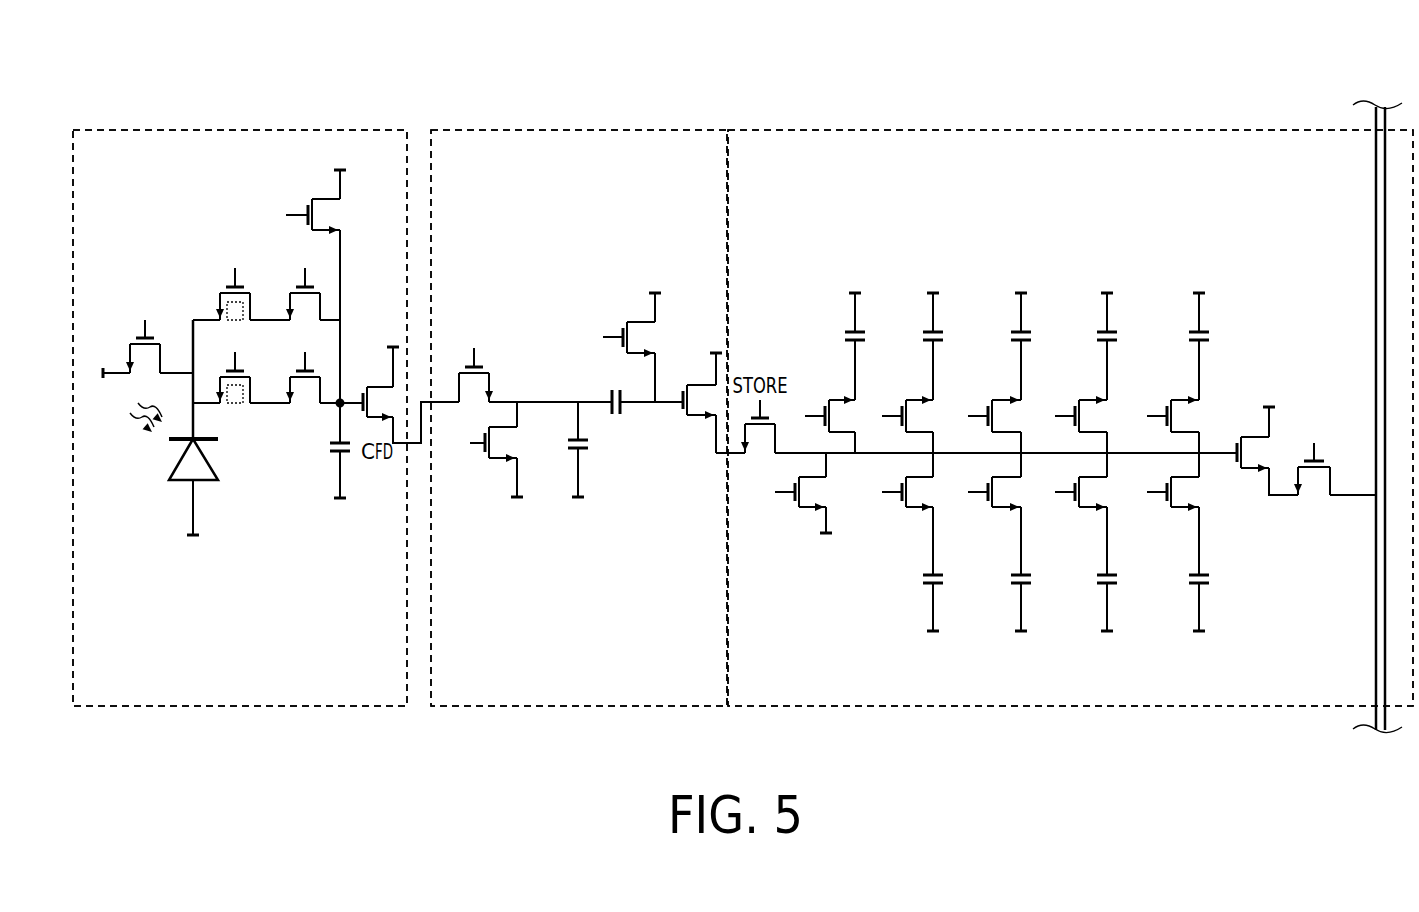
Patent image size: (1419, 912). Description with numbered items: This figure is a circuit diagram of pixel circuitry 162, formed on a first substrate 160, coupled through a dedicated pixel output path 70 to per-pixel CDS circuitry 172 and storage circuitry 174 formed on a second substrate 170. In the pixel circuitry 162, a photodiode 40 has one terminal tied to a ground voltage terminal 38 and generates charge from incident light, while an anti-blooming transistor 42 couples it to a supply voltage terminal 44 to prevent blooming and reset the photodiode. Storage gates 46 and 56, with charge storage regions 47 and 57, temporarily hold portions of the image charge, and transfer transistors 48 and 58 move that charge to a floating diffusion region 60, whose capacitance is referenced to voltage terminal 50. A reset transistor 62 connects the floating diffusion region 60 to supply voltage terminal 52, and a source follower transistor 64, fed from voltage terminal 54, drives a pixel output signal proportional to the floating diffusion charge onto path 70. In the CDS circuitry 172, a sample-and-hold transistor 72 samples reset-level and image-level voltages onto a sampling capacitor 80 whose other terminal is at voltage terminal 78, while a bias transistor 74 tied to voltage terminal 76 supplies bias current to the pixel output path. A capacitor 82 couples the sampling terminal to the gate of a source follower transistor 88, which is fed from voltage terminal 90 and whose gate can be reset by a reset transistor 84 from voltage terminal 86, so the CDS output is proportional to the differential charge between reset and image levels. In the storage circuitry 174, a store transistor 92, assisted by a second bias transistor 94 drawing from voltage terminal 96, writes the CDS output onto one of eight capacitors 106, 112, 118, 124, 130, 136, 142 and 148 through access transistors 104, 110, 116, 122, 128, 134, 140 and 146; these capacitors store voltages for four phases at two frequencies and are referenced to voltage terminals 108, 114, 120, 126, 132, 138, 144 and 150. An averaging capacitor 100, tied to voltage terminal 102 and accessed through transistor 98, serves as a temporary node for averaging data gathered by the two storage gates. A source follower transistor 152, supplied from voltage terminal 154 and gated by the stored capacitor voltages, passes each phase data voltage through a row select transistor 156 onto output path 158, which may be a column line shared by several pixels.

The voltage terminal 38 is at (193, 552).
The photodiode 40 is at (205, 487).
The anti-blooming transistor 42 is at (130, 348).
The voltage terminal 44 is at (104, 374).
The storage gate 46 is at (220, 296).
The charge storage region 47 is at (240, 312).
The transfer transistor 48 is at (290, 296).
The voltage terminal 50 is at (340, 514).
The voltage terminal 52 is at (340, 156).
The voltage terminal 54 is at (393, 353).
The storage gate 56 is at (220, 380).
The charge storage region 57 is at (240, 396).
The transfer transistor 58 is at (290, 380).
The floating diffusion region 60 is at (336, 412).
The reset transistor 62 is at (309, 205).
The source follower transistor 64 is at (363, 395).
The pixel circuitry output path 70 is at (421, 412).
The sample-and-hold transistor 72 is at (489, 375).
The bias transistor 74 is at (487, 460).
The voltage terminal 76 is at (517, 492).
The voltage terminal 78 is at (578, 511).
The sampling capacitor 80 is at (591, 449).
The capacitor 82 is at (617, 389).
The reset transistor 84 is at (625, 325).
The voltage terminal 86 is at (653, 293).
The source follower transistor 88 is at (685, 418).
The voltage terminal 90 is at (716, 355).
The store transistor 92 is at (760, 442).
The bias transistor 94 is at (797, 510).
The voltage terminal 96 is at (826, 535).
The capacitor access transistor 98 is at (826, 403).
The averaging capacitor 100 is at (871, 340).
The voltage terminal 102 is at (855, 298).
The capacitor access transistor 104 is at (904, 403).
The capacitor 106 is at (948, 340).
The voltage terminal 108 is at (933, 298).
The capacitor access transistor 110 is at (990, 403).
The capacitor 112 is at (1036, 340).
The voltage terminal 114 is at (1021, 298).
The capacitor access transistor 116 is at (1077, 403).
The capacitor 118 is at (1123, 340).
The voltage terminal 120 is at (1107, 298).
The capacitor access transistor 122 is at (1170, 403).
The capacitor 124 is at (1215, 340).
The voltage terminal 126 is at (1199, 298).
The capacitor access transistor 128 is at (904, 510).
The capacitor 130 is at (949, 583).
The voltage terminal 132 is at (933, 622).
The capacitor access transistor 134 is at (990, 510).
The capacitor 136 is at (1036, 583).
The voltage terminal 138 is at (1021, 622).
The capacitor access transistor 140 is at (1077, 510).
The capacitor 142 is at (1122, 583).
The voltage terminal 144 is at (1107, 622).
The capacitor access transistor 146 is at (1170, 510).
The capacitor 148 is at (1215, 583).
The voltage terminal 150 is at (1199, 622).
The source follower transistor 152 is at (1239, 466).
The voltage terminal 154 is at (1270, 408).
The row select transistor 156 is at (1331, 470).
The path 158 is at (1373, 310).
The first substrate 160 is at (286, 65).
The pixel circuitry 162 is at (100, 130).
The second substrate 170 is at (495, 65).
The CDS circuitry 172 is at (623, 130).
The storage circuitry 174 is at (763, 130).